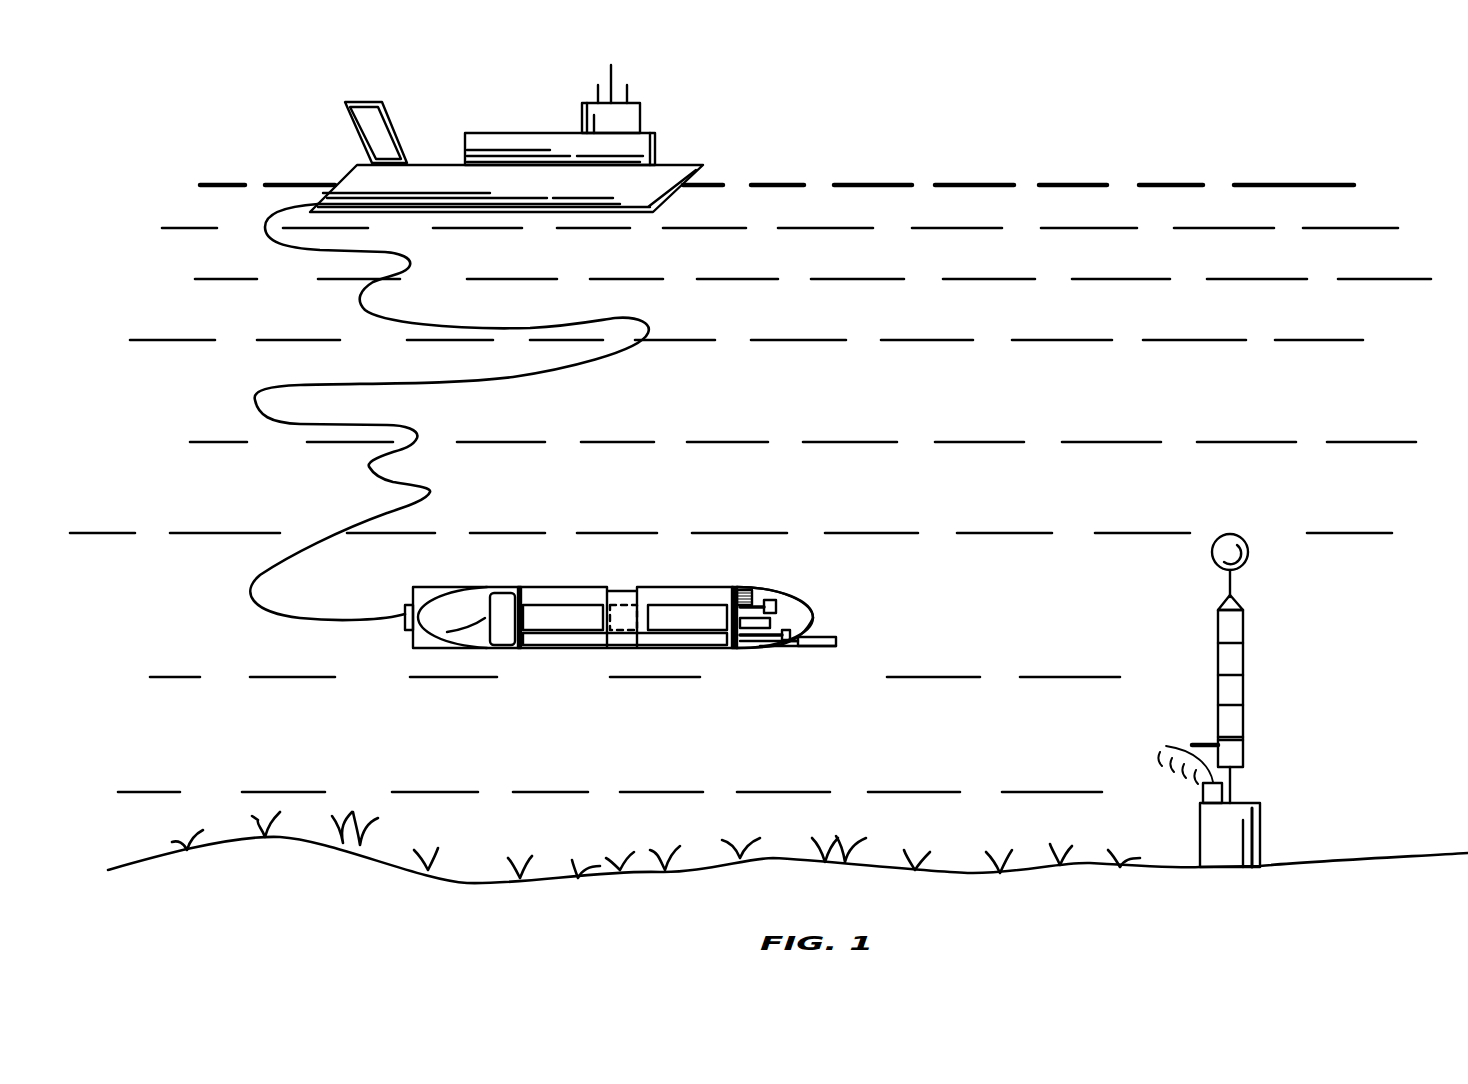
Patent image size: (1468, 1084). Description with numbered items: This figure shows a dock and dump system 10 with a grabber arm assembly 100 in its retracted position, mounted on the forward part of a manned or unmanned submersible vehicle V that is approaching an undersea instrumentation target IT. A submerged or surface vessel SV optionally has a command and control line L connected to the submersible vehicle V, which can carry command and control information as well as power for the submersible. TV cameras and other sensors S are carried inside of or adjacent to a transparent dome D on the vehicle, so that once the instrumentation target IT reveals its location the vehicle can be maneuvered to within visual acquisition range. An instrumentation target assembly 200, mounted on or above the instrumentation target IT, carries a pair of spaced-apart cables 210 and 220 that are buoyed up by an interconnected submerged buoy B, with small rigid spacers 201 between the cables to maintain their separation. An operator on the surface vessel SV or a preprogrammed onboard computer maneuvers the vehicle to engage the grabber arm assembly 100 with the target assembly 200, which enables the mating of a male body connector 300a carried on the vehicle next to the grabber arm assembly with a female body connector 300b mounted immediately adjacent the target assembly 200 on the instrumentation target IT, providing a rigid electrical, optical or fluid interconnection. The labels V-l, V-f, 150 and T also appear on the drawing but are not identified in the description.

The dock and dump system 10 is at (947, 430).
The surface vessel SV is at (528, 133).
The command and control line L is at (505, 380).
The grabber arm assembly 100 is at (650, 638).
The submersible vehicle V is at (687, 592).
The vehicle forward section V-l is at (525, 649).
The vehicle aft section V-f is at (750, 597).
The transparent dome D is at (800, 596).
The sensors S is at (826, 596).
The male body connector 300a is at (829, 637).
The latching member 150 is at (838, 647).
The instrumentation target assembly 200 is at (1237, 689).
The submerged buoy B is at (1246, 546).
The rigid spacers 201 is at (1244, 606).
The cable 210 is at (1214, 618).
The cable 220 is at (1244, 636).
The female body connector 300b is at (1193, 739).
The acoustic transmitter T is at (1185, 767).
The instrumentation target IT is at (1259, 843).